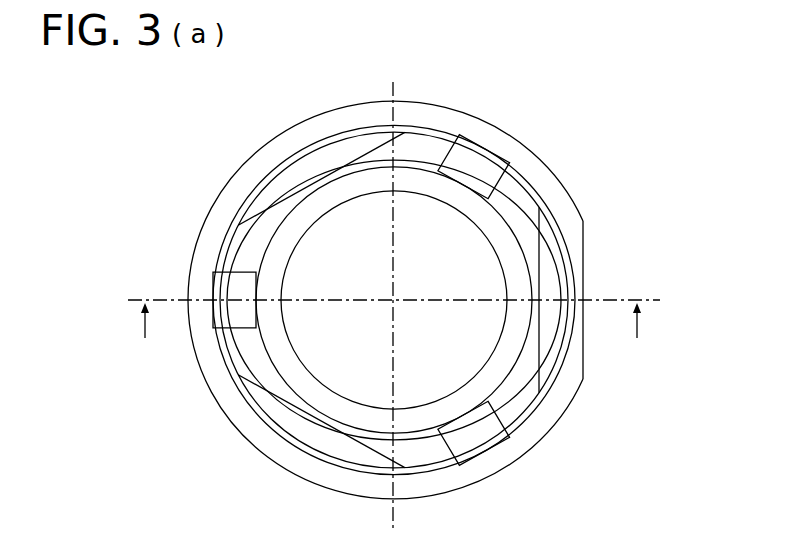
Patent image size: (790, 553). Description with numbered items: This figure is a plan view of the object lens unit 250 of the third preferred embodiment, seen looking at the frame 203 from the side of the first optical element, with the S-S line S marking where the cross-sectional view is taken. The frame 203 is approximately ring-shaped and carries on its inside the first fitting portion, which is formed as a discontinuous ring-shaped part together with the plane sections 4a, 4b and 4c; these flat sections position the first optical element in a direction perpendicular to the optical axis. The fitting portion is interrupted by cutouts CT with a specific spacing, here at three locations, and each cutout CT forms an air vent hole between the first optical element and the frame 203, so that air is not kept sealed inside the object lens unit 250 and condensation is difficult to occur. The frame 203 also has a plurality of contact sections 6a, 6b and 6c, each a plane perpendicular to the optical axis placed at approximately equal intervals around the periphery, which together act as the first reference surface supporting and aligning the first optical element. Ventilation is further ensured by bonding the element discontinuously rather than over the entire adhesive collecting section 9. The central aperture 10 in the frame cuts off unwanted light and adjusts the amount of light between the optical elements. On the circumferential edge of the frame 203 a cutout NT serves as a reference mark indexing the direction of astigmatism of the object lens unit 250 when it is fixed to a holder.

The object lens unit 250 is at (597, 191).
The cutout NT is at (588, 370).
The adhesive collecting section 9 is at (300, 452).
The frame 203 is at (195, 378).
The aperture 10 is at (325, 388).
The contact section 6a is at (535, 207).
The contact section 6b is at (240, 222).
The contact section 6c is at (412, 462).
The plane section 4a is at (545, 290).
The plane section 4b is at (303, 165).
The plane section 4c is at (333, 452).
The cutout CT is at (432, 162).
The S-S line S is at (391, 333).